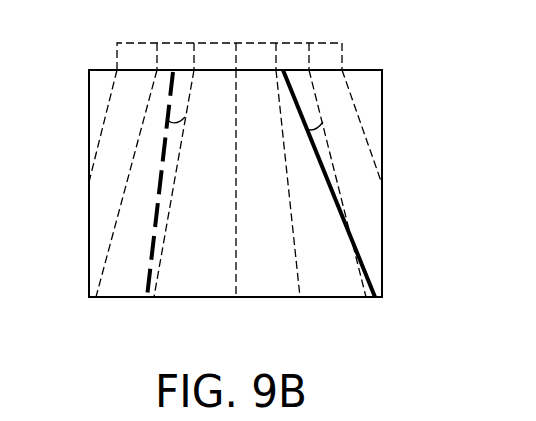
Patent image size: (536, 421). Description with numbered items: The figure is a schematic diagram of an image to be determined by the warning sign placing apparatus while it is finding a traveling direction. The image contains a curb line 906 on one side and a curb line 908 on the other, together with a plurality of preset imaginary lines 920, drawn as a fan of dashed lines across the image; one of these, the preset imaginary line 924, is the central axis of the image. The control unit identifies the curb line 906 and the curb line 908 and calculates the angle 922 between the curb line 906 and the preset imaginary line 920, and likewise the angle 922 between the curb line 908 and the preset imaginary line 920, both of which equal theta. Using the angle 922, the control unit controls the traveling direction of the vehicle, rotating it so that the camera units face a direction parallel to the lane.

The preset imaginary lines 920 is at (342, 57).
The angle 922 is at (170, 173).
The curb line 906 is at (150, 244).
The preset imaginary line 924 is at (235, 270).
The curb line 908 is at (352, 247).